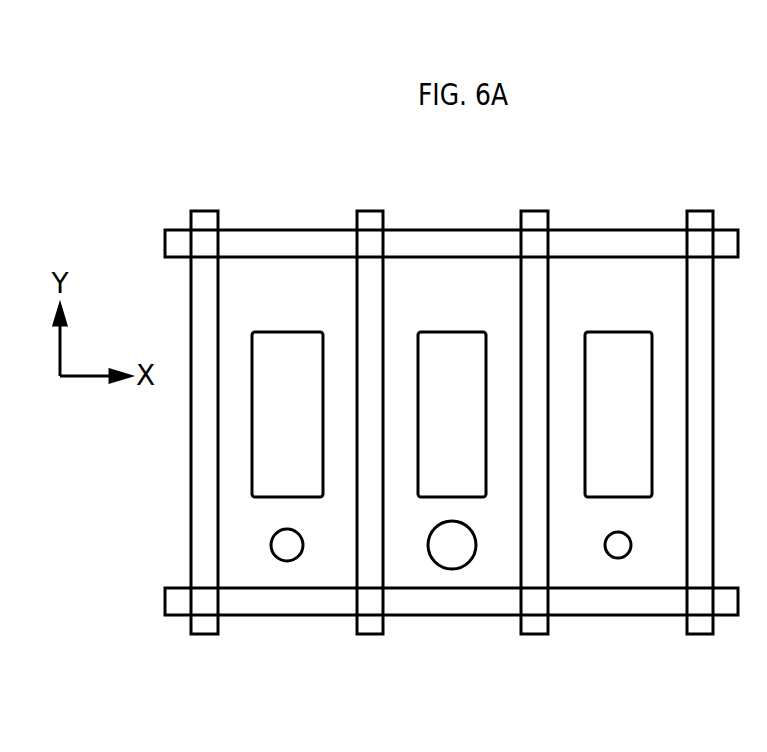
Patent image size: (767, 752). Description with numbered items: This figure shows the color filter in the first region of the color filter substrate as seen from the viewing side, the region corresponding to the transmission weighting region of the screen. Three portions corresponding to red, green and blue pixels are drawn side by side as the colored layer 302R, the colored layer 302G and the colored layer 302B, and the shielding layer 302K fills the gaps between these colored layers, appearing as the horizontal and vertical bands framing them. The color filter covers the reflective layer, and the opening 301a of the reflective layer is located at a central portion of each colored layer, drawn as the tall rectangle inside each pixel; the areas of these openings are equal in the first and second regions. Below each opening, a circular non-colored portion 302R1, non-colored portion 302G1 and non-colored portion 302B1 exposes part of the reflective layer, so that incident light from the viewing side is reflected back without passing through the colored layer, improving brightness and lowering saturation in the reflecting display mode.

The opening 301a is at (300, 340).
The colored layer 302R is at (281, 422).
The colored layer 302G is at (448, 418).
The colored layer 302B is at (608, 418).
The shielding layer 302K is at (666, 237).
The non-colored portion 302R1 is at (287, 550).
The non-colored portion 302G1 is at (452, 550).
The non-colored portion 302B1 is at (618, 550).